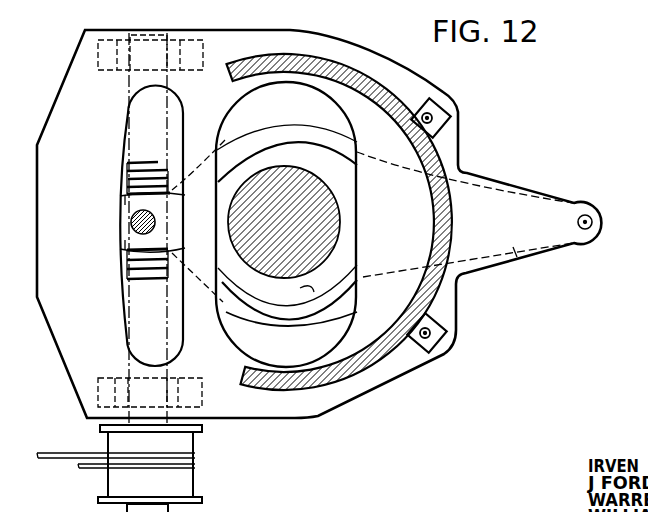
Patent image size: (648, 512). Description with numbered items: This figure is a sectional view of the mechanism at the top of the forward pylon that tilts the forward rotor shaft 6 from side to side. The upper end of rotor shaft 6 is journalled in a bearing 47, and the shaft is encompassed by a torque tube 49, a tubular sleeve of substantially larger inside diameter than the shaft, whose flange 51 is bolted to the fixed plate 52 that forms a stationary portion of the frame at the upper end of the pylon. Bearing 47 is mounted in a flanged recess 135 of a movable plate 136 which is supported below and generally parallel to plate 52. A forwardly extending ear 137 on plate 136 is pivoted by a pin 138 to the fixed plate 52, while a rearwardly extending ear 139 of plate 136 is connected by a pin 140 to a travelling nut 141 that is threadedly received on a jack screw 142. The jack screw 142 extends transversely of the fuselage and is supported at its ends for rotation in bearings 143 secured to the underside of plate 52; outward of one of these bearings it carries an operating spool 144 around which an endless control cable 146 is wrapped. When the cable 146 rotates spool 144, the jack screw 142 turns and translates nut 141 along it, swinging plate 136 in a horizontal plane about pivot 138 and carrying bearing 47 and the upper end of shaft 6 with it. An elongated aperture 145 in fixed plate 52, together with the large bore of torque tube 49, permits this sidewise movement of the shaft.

The rotor shaft 6 is at (337, 222).
The bearing 47 is at (338, 253).
The torque tube 49 is at (440, 173).
The flange 51 is at (429, 98).
The plate 52 is at (450, 110).
The flanged recess 135 is at (306, 286).
The movable plate 136 is at (335, 296).
The forwardly extending ear 137 is at (513, 256).
The pin 138 is at (590, 215).
The rearwardly extending ear 139 is at (125, 224).
The pin 140 is at (137, 212).
The travelling nut 141 is at (125, 250).
The jack screw 142 is at (140, 314).
The bearings 143 is at (108, 44).
The operating spool 144 is at (192, 486).
The elongated aperture 145 is at (347, 133).
The endless control cable 146 is at (97, 472).